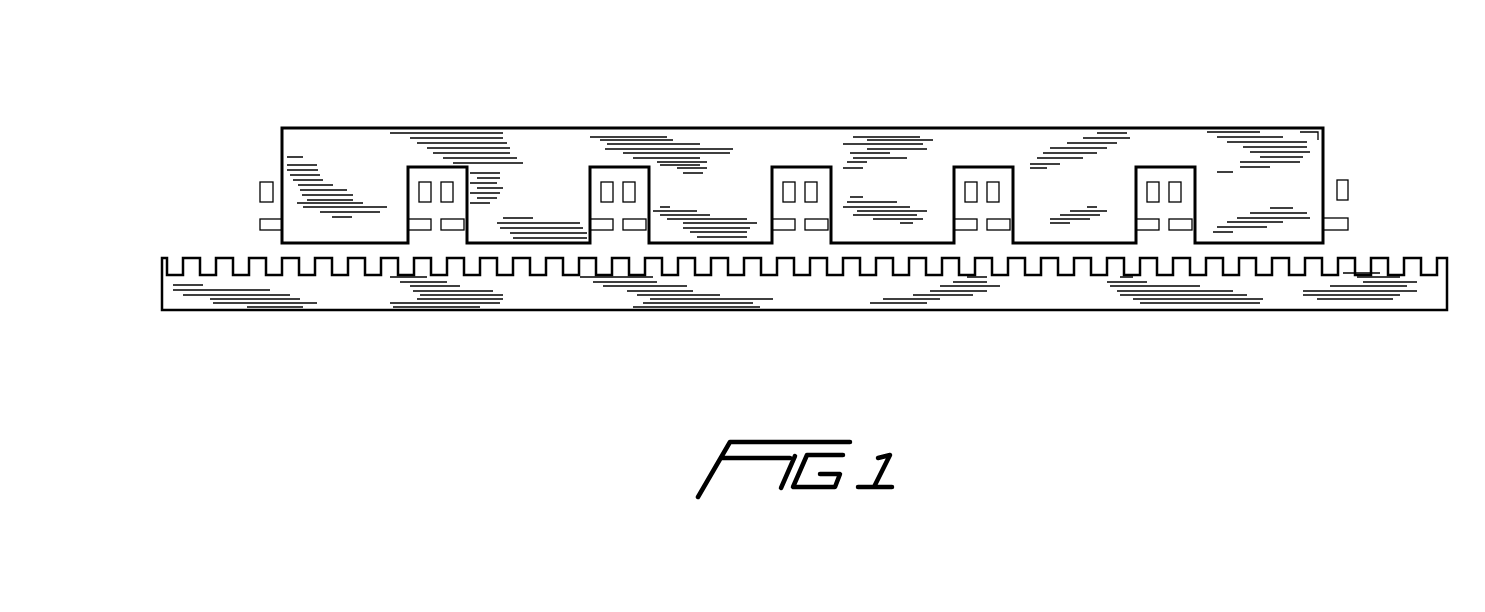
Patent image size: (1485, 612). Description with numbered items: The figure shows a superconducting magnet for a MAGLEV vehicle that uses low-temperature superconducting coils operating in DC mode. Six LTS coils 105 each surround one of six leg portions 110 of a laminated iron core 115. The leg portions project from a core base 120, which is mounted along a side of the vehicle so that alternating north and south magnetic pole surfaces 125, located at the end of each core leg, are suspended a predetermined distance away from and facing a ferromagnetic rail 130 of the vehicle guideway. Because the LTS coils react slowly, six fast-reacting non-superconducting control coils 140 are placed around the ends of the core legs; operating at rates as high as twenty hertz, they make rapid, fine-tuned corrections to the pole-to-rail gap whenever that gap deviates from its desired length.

The low-temperature superconducting coil 105 is at (428, 180).
The leg portion 110 is at (343, 195).
The laminated iron core 115 is at (1298, 125).
The core base 120 is at (280, 142).
The magnetic pole surface 125 is at (343, 245).
The ferromagnetic rail 130 is at (1446, 275).
The control coil 140 is at (256, 226).